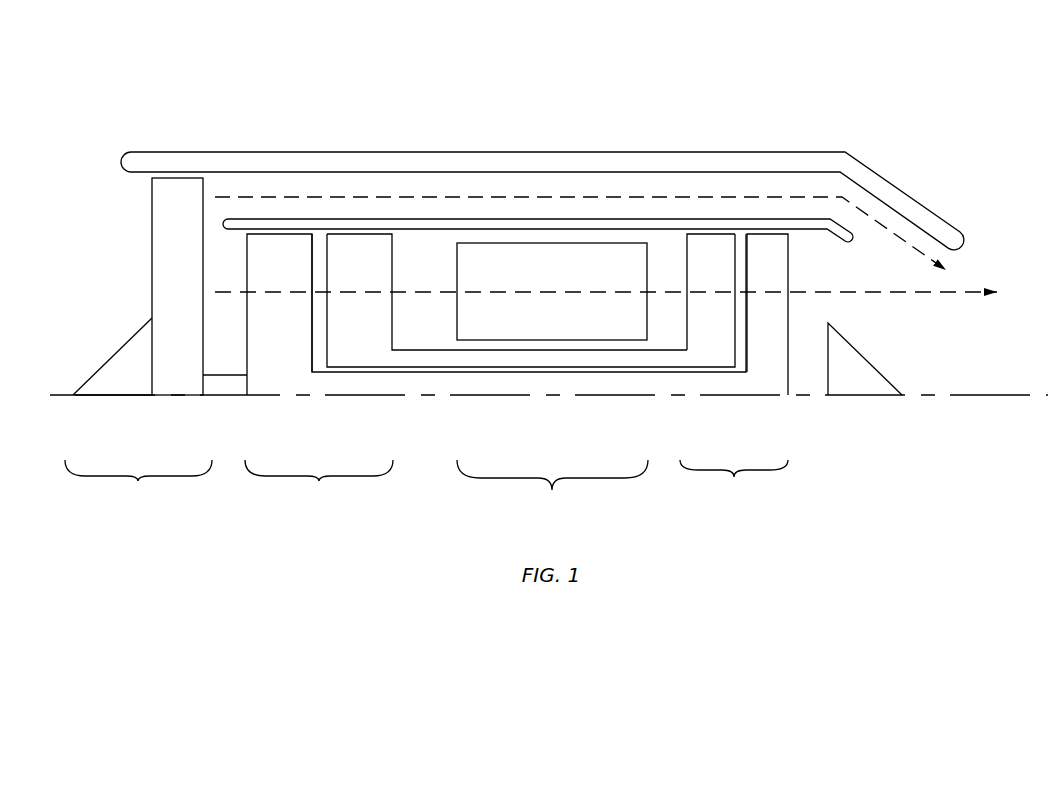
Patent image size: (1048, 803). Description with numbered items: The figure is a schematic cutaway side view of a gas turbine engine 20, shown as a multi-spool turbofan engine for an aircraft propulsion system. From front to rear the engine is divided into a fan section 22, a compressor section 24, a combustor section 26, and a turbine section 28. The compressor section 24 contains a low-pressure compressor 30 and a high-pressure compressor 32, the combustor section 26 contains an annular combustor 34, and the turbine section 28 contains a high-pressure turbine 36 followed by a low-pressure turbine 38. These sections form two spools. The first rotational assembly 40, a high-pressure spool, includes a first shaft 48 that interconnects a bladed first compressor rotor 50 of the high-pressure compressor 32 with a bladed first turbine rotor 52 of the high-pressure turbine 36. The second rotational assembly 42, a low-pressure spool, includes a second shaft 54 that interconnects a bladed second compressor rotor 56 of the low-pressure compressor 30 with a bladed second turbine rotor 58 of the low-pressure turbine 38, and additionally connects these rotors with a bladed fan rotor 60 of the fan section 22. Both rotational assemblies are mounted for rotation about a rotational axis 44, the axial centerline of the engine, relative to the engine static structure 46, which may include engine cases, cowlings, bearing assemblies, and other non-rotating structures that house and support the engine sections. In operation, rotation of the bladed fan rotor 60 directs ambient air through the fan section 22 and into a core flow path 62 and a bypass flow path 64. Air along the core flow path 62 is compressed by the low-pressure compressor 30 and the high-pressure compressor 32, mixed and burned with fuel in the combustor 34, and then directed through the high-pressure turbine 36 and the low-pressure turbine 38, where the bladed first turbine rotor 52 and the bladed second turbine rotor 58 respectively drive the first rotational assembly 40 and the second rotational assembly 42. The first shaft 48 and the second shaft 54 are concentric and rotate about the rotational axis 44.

The gas turbine engine 20 is at (862, 100).
The fan section 22 is at (138, 485).
The compressor section 24 is at (319, 485).
The combustor section 26 is at (552, 488).
The turbine section 28 is at (734, 482).
The low-pressure compressor 30 is at (241, 327).
The high-pressure compressor 32 is at (398, 316).
The combustor 34 is at (542, 275).
The high-pressure turbine 36 is at (682, 327).
The low-pressure turbine 38 is at (795, 325).
The first rotational assembly 40 is at (363, 348).
The second rotational assembly 42 is at (735, 383).
The rotational axis 44 is at (1038, 396).
The engine static structure 46 is at (630, 219).
The first shaft 48 is at (472, 357).
The bladed first compressor rotor 50 is at (347, 275).
The bladed first turbine rotor 52 is at (700, 275).
The second shaft 54 is at (563, 382).
The bladed second compressor rotor 56 is at (268, 275).
The bladed second turbine rotor 58 is at (756, 275).
The bladed fan rotor 60 is at (188, 275).
The core flow path 62 is at (917, 293).
The bypass flow path 64 is at (360, 197).